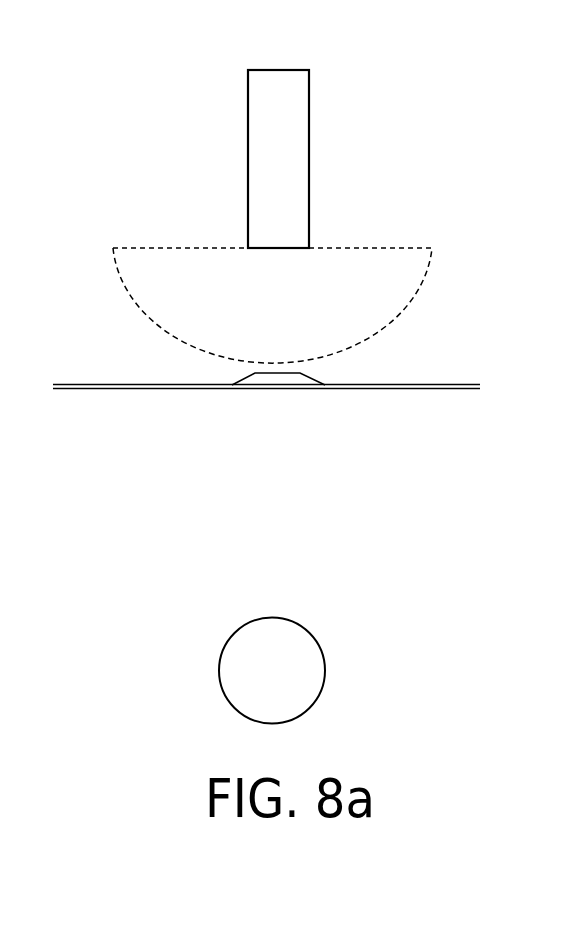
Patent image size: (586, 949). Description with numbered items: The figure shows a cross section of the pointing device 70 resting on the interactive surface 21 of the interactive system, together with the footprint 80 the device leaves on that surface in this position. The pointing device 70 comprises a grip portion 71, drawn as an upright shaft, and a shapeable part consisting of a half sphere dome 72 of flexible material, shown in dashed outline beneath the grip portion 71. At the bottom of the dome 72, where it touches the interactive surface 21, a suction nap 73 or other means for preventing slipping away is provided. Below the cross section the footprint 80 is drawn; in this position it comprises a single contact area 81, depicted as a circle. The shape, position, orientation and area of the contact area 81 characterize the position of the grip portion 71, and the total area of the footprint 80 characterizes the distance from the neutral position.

The pointing device 70 is at (112, 92).
The grip portion 71 is at (309, 158).
The half sphere dome 72 is at (418, 305).
The suction nap 73 is at (278, 380).
The interactive surface 21 is at (420, 389).
The footprint 80 is at (210, 613).
The contact area 81 is at (325, 668).